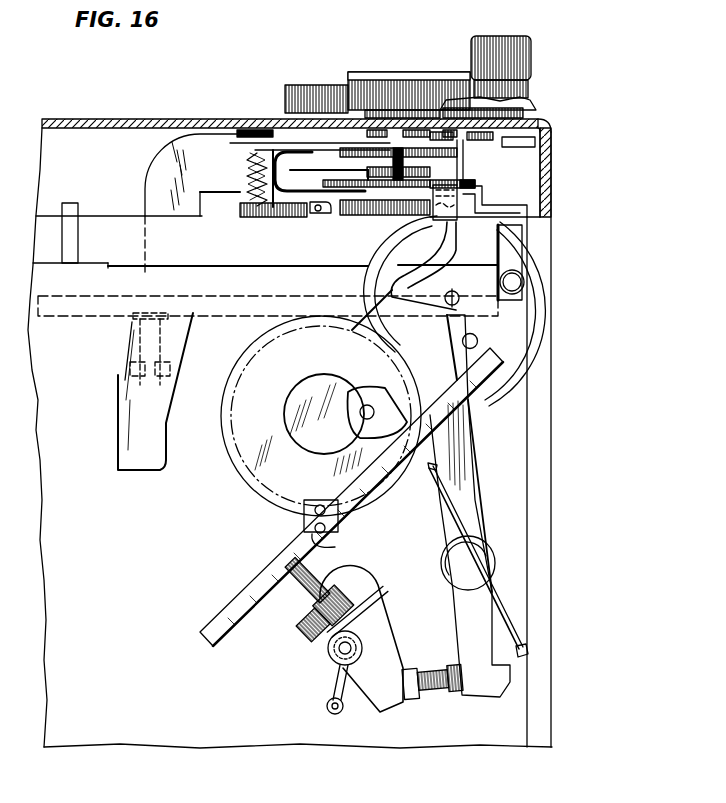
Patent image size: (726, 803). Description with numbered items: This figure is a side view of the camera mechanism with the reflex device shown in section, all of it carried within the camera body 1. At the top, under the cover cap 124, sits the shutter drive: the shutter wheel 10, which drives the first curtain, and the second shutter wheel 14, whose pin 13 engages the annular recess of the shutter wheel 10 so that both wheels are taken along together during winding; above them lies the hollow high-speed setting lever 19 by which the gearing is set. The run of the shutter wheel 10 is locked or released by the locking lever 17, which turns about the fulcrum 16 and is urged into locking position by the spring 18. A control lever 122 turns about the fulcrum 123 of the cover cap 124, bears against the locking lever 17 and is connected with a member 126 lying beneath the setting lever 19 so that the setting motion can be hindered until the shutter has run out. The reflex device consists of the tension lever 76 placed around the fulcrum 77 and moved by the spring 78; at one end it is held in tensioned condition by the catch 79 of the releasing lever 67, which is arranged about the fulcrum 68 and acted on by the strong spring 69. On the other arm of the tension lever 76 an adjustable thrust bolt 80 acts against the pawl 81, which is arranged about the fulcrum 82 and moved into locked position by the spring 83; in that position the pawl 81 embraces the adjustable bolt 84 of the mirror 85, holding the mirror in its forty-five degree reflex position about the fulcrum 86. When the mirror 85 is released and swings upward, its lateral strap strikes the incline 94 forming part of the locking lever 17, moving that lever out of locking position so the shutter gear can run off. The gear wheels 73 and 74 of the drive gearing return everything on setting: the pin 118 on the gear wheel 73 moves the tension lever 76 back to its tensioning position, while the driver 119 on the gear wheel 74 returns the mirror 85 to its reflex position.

The camera body 1 is at (540, 477).
The shutter wheel 10 is at (410, 153).
The pin 13 is at (350, 193).
The shutter wheel 14 is at (370, 173).
The fulcrum 16 is at (262, 135).
The locking lever 17 is at (152, 192).
The spring 18 is at (252, 160).
The high-speed setting lever 19 is at (417, 100).
The releasing lever 67 is at (387, 215).
The fulcrum 68 is at (288, 90).
The spring 69 is at (293, 148).
The gear wheel 73 is at (503, 257).
The gear wheel 74 is at (243, 418).
The tension lever 76 is at (447, 445).
The fulcrum 77 is at (470, 567).
The spring 78 is at (517, 615).
The catch 79 is at (477, 183).
The thrust bolt 80 is at (432, 692).
The pawl 81 is at (385, 700).
The fulcrum 82 is at (328, 705).
The spring 83 is at (345, 668).
The bolt 84 is at (318, 630).
The mirror 85 is at (355, 552).
The fulcrum 86 is at (517, 283).
The incline 94 is at (125, 363).
The pin 118 is at (478, 341).
The driver 119 is at (338, 528).
The control lever 122 is at (527, 140).
The fulcrum 123 is at (530, 127).
The cover cap 124 is at (97, 118).
The member 126 is at (460, 112).